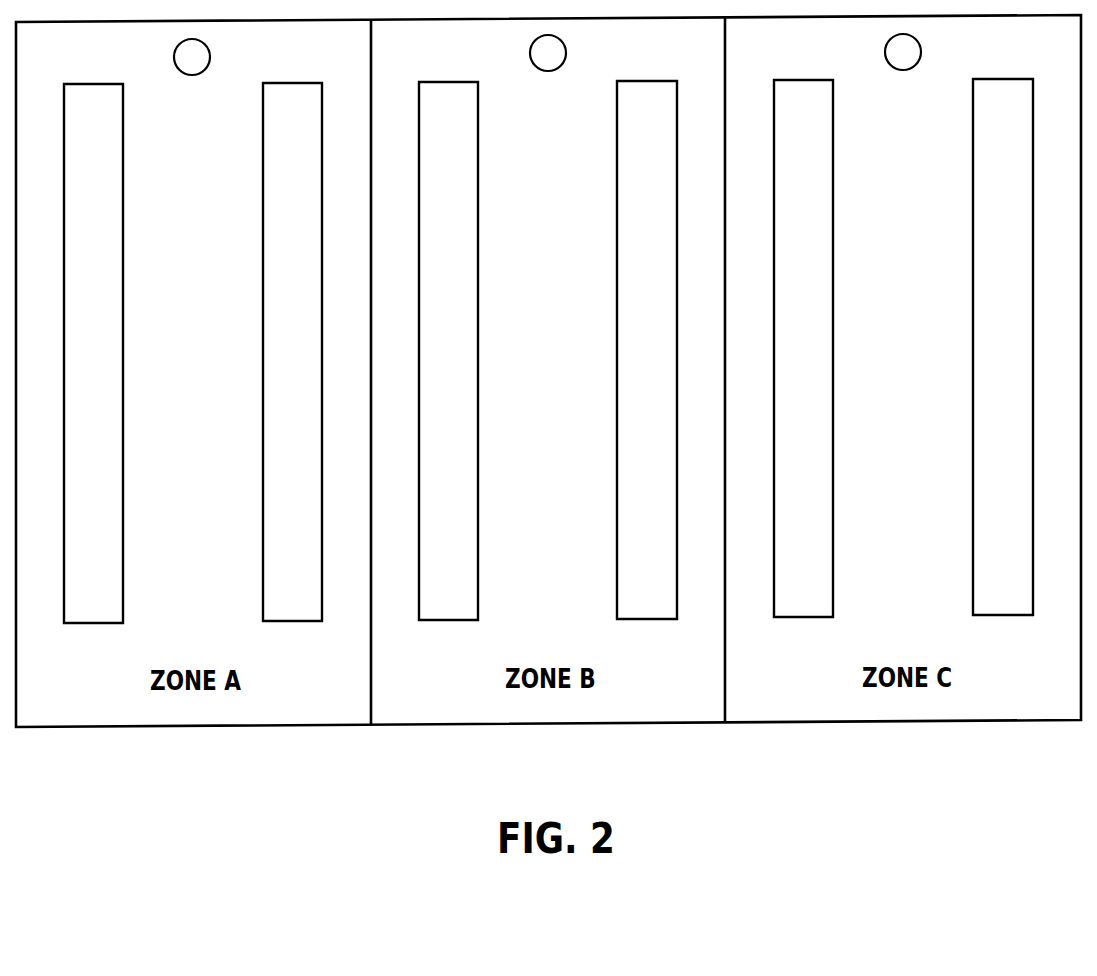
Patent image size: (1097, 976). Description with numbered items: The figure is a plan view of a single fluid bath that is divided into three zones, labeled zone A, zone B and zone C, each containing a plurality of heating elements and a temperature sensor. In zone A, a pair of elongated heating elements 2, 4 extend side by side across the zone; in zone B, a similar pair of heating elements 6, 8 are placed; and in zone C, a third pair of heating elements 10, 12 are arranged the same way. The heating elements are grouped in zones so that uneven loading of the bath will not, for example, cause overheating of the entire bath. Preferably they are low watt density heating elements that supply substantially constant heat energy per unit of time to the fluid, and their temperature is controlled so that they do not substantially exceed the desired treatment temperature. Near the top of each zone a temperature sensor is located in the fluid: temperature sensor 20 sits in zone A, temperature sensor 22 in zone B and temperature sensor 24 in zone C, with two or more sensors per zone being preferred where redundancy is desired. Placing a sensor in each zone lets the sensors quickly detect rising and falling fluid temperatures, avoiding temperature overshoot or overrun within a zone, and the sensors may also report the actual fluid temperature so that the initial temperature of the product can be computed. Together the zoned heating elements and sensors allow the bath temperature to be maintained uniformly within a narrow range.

The heating element 2 is at (123, 216).
The heating element 4 is at (263, 215).
The heating element 6 is at (478, 213).
The heating element 8 is at (617, 212).
The heating element 10 is at (833, 212).
The heating element 12 is at (973, 210).
The temperature sensor 20 is at (210, 56).
The temperature sensor 22 is at (566, 52).
The temperature sensor 24 is at (921, 50).